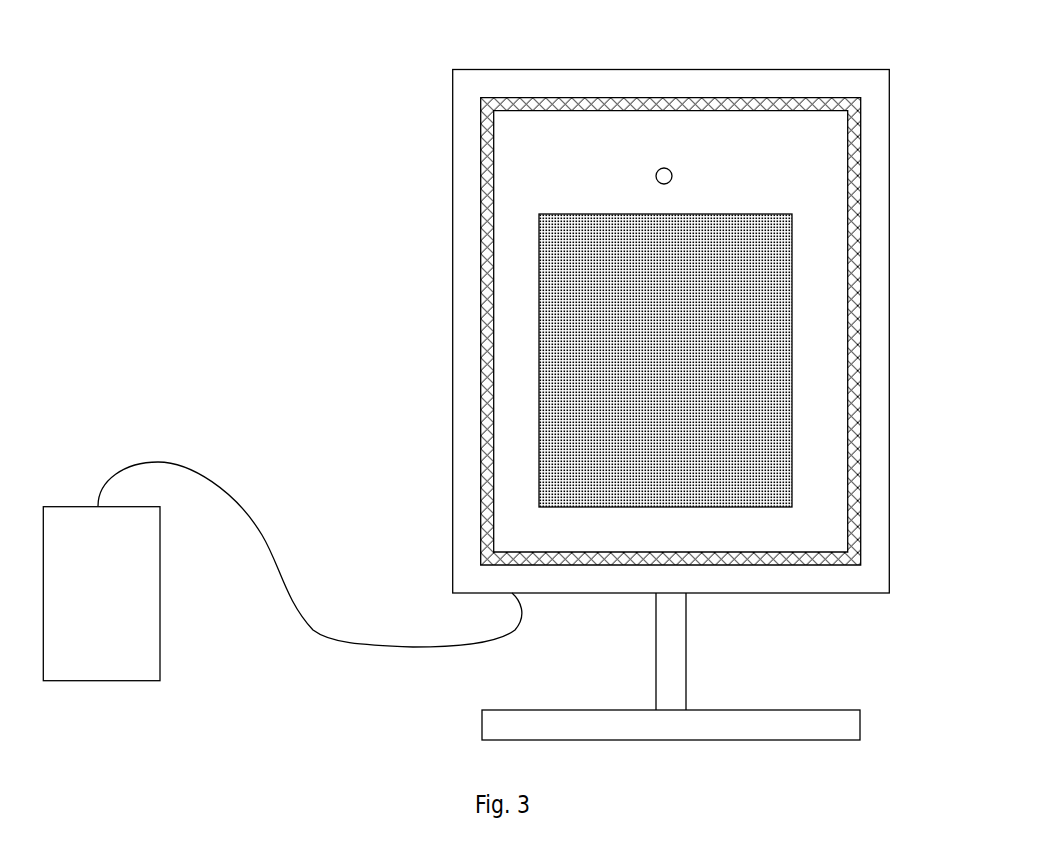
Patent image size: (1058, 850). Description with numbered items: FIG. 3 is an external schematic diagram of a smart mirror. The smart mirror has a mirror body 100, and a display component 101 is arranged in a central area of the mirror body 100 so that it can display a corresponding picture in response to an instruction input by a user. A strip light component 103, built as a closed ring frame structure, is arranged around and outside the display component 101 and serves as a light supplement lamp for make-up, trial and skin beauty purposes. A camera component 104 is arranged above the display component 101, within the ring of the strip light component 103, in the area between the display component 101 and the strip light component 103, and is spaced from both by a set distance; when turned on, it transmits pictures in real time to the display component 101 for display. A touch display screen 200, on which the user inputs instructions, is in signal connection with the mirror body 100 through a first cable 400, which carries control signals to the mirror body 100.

The mirror body 100 is at (867, 70).
The display component 101 is at (792, 272).
The strip light component 103 is at (861, 185).
The camera component 104 is at (664, 168).
The touch display screen 200 is at (110, 681).
The first cable 400 is at (340, 636).